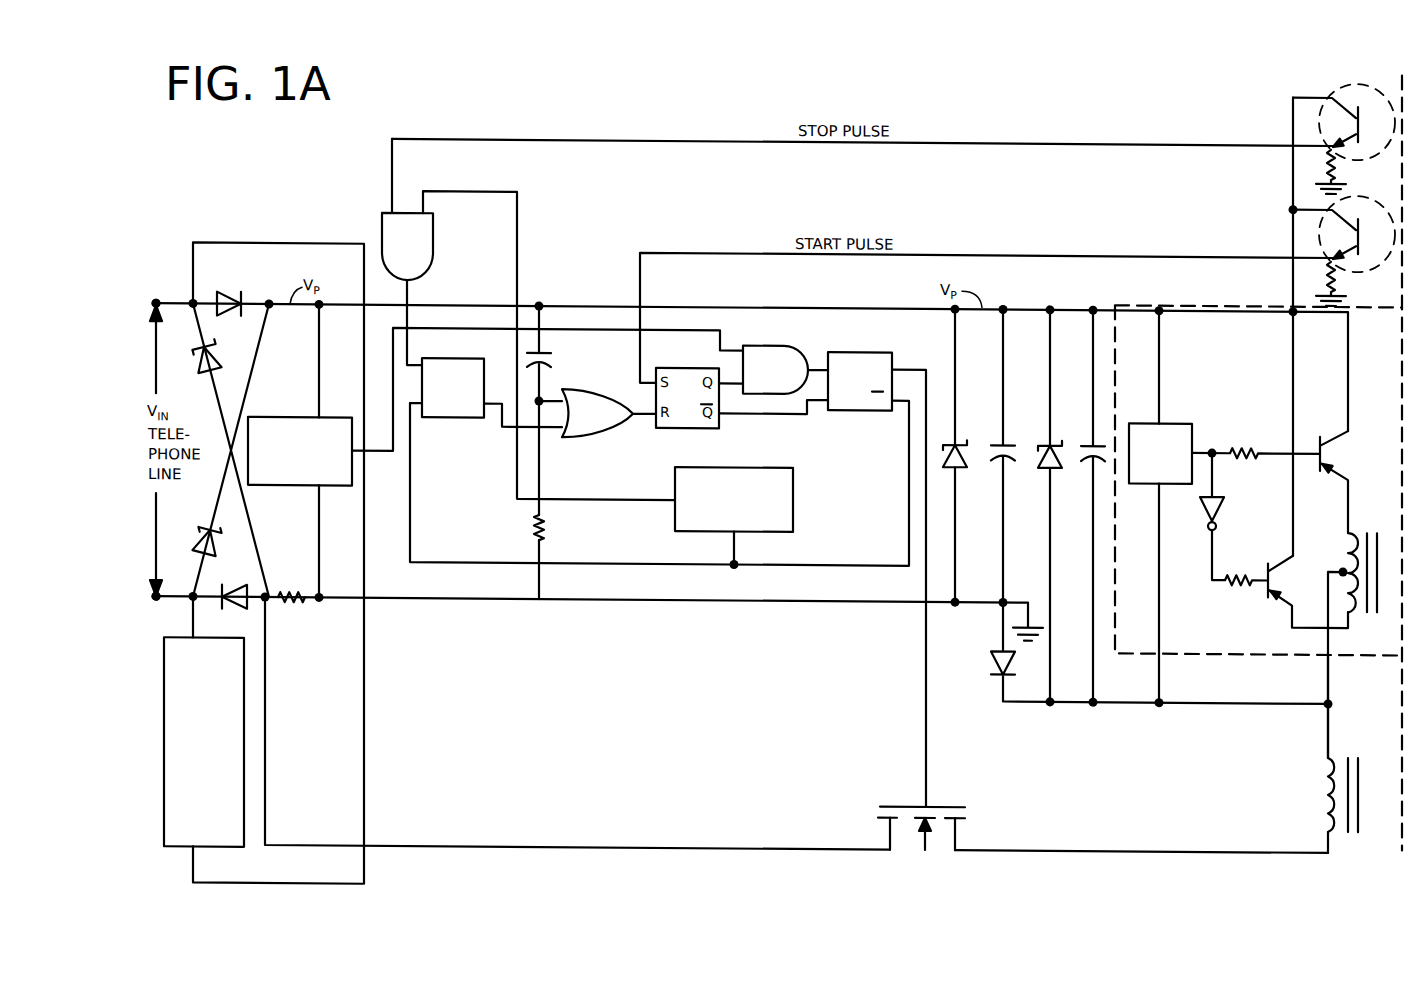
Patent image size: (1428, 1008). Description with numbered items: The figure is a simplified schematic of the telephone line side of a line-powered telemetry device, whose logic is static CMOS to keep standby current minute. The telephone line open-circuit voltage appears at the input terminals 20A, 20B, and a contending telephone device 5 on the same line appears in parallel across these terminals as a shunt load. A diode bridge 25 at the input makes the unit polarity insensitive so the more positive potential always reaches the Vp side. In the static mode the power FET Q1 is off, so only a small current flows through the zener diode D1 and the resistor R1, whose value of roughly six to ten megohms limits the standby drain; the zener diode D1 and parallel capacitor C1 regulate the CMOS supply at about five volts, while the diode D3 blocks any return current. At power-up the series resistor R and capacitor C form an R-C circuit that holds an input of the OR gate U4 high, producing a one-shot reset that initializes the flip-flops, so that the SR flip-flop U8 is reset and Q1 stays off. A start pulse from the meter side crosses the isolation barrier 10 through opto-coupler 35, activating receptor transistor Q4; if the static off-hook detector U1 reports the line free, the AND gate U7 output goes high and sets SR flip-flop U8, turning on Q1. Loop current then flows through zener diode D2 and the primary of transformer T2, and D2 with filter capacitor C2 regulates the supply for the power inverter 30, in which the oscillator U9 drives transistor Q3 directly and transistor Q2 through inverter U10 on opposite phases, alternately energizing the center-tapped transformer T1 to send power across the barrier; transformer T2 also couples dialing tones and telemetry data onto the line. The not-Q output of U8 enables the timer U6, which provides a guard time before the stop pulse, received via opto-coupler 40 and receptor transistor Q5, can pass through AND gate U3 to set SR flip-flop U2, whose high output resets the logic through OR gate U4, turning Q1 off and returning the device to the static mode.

The contending telephone device 5 is at (220, 845).
The isolation barrier 10 is at (1400, 718).
The input terminal 20A is at (156, 300).
The input terminal 20B is at (156, 597).
The diode bridge 25 is at (225, 288).
The power inverter 30 is at (1198, 296).
The opto-coupler 35 is at (1344, 240).
The opto-coupler 40 is at (1344, 131).
The static off-hook detector U1 is at (275, 415).
The SR flip-flop U2 is at (476, 355).
The AND gate U3 is at (528, 319).
The OR gate U4 is at (609, 413).
The timer U6 is at (797, 505).
The AND gate U7 is at (785, 370).
The SR flip-flop U8 is at (878, 415).
The oscillator U9 is at (1224, 506).
The inverter U10 is at (1222, 500).
The power FET Q1 is at (905, 843).
The transistor Q2 is at (1272, 598).
The transistor Q3 is at (1336, 449).
The receptor transistor Q4 is at (1341, 258).
The receptor transistor Q5 is at (1339, 146).
The zener diode D1 is at (964, 455).
The zener diode D2 is at (1058, 506).
The diode D3 is at (993, 658).
The capacitor C1 is at (1002, 455).
The filter capacitor C2 is at (1091, 506).
The capacitor C is at (546, 362).
The resistor R is at (546, 527).
The resistor R1 is at (291, 606).
The center-tapped transformer T1 is at (1367, 594).
The transformer T2 is at (1360, 817).